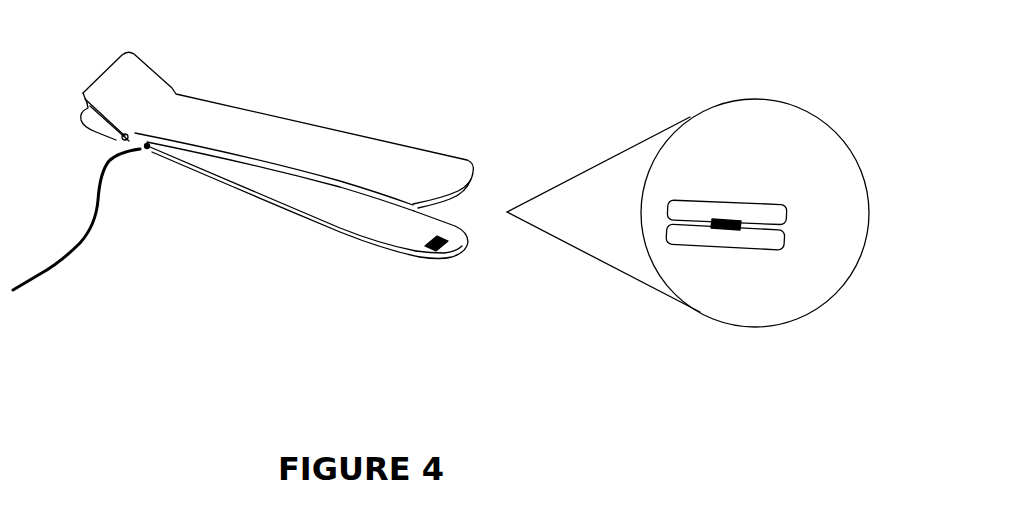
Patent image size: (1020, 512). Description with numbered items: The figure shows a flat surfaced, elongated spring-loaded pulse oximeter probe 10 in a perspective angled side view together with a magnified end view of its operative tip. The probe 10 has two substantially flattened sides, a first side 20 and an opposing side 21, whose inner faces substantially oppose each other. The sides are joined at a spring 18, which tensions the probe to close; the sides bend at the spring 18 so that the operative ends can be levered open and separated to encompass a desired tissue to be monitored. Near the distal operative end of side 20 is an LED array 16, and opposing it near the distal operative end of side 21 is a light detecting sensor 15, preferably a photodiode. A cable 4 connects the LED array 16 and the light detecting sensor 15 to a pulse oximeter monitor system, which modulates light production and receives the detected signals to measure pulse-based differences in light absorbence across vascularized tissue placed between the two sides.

The probe 10 is at (329, 73).
The substantially flattened side 20 is at (395, 153).
The opposing substantially flattened side 21 is at (357, 223).
The spring 18 is at (113, 140).
The cable 4 is at (62, 263).
The LED array 16 is at (451, 203).
The light detecting sensor 15 is at (447, 247).